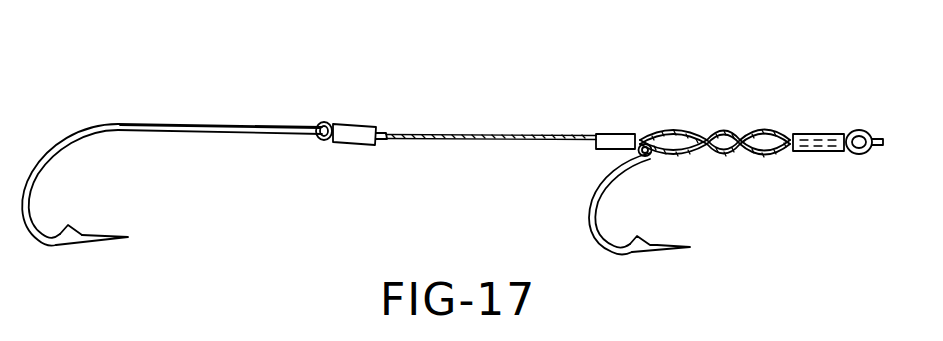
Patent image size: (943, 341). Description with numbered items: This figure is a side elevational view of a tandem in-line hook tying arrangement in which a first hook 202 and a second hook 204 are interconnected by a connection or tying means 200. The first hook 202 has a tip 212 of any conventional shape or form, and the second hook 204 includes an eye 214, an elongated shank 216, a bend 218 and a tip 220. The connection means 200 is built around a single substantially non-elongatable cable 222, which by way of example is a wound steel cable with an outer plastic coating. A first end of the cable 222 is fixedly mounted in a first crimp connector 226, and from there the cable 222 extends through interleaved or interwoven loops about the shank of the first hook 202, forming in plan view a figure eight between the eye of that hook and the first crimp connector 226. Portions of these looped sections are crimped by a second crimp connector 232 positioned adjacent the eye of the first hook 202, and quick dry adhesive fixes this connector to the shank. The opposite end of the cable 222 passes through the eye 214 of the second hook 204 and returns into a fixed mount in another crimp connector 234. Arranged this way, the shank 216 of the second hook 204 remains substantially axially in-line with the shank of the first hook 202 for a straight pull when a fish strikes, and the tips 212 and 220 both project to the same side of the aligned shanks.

The connection or tying means 200 is at (660, 42).
The first hook 202 is at (605, 213).
The second hook 204 is at (86, 160).
The tip 212 is at (655, 241).
The eye 214 is at (319, 121).
The elongated shank 216 is at (117, 124).
The bend 218 is at (65, 244).
The tip 220 is at (90, 230).
The cable 222 is at (497, 134).
The first crimp connector 226 is at (613, 133).
The second crimp connector 232 is at (800, 133).
The second crimp connector 234 is at (345, 124).